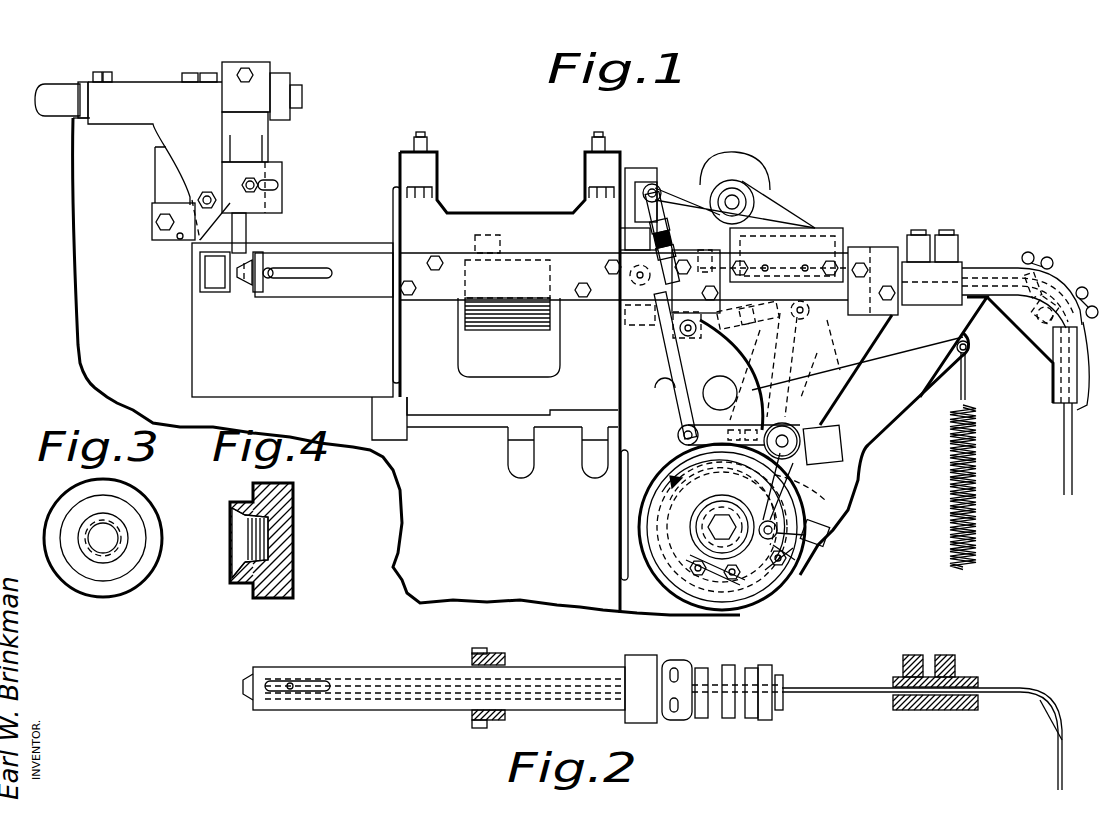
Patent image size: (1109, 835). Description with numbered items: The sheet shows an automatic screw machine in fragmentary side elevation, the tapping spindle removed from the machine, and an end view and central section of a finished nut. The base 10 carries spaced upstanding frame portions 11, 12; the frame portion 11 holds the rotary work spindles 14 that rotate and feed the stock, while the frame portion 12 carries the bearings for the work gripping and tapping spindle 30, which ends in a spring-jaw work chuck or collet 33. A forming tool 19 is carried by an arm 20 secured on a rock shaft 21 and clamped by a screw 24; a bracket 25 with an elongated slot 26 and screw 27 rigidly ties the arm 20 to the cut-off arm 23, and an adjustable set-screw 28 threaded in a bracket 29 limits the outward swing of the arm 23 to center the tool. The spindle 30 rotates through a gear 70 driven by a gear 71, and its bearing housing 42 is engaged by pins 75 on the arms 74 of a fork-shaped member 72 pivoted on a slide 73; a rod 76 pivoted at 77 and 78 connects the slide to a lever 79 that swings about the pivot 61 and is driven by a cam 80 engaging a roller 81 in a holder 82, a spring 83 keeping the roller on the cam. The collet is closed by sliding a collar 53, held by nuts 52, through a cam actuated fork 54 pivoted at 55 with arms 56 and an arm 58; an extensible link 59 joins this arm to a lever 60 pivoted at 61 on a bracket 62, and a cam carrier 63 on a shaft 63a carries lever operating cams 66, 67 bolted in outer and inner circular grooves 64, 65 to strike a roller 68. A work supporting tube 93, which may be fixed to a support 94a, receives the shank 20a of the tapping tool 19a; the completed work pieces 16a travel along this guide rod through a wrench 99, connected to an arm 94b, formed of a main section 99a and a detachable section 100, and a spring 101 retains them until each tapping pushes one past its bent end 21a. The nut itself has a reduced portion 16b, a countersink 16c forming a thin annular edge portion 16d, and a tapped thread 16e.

In FIG. 1, the base 10 is at (440, 486).
In FIG. 1, the frame portion 11 is at (75, 160).
In FIG. 1, the frame portion 12 is at (524, 210).
In FIG. 1, the rotary work spindle 14 is at (218, 283).
In FIG. 3, the severed work piece 16a is at (115, 586).
In FIG. 4, the severed work piece 16a is at (285, 596).
In FIG. 4, the reduced portion 16b is at (240, 582).
In FIG. 4, the countersink 16c is at (230, 520).
In FIG. 4, the annular edge portion 16d is at (237, 500).
In FIG. 4, the tapped thread 16e is at (262, 536).
In FIG. 1, the forming tool 19 is at (272, 268).
In FIG. 2, the tapping tool 19a is at (290, 692).
In FIG. 1, the arm 20 is at (262, 148).
In FIG. 1, the shank 20a is at (875, 255).
In FIG. 2, the shank 20a is at (826, 695).
In FIG. 1, the rock shaft 21 is at (52, 105).
In FIG. 1, the bent end 21a is at (1048, 325).
In FIG. 2, the bent end 21a is at (1055, 705).
In FIG. 1, the arm 23 is at (150, 128).
In FIG. 1, the screw 24 is at (255, 72).
In FIG. 1, the bracket 25 is at (275, 203).
In FIG. 1, the elongated slot 26 is at (278, 186).
In FIG. 1, the screw 27 is at (258, 182).
In FIG. 1, the adjustable set-screw 28 is at (208, 190).
In FIG. 1, the bracket 29 is at (152, 213).
In FIG. 1, the work gripping and tapping spindle 30 is at (362, 285).
In FIG. 2, the work gripping and tapping spindle 30 is at (416, 668).
In FIG. 1, the work chuck or collet 33 is at (245, 288).
In FIG. 2, the work chuck or collet 33 is at (243, 695).
In FIG. 1, the bearing housing 42 is at (625, 312).
In FIG. 2, the bearing housing 42 is at (633, 715).
In FIG. 2, the nuts 52 is at (752, 668).
In FIG. 1, the collar 53 is at (665, 185).
In FIG. 2, the collar 53 is at (702, 670).
In FIG. 1, the cam actuated fork 54 is at (756, 222).
In FIG. 1, the pivot 55 is at (760, 195).
In FIG. 1, the fork arms 56 is at (745, 252).
In FIG. 1, the arm 58 is at (712, 170).
In FIG. 1, the extensible link 59 is at (668, 345).
In FIG. 1, the lever 60 is at (678, 428).
In FIG. 1, the pivot 61 is at (800, 438).
In FIG. 1, the bracket 62 is at (880, 338).
In FIG. 1, the cam carrier 63 is at (640, 527).
In FIG. 1, the shaft 63a is at (675, 508).
In FIG. 1, the outer circular groove 64 is at (700, 512).
In FIG. 1, the inner circular groove 65 is at (690, 535).
In FIG. 1, the lever operating cam 66 is at (800, 550).
In FIG. 1, the lever operating cam 67 is at (708, 574).
In FIG. 1, the roller 68 is at (788, 470).
In FIG. 1, the gear 70 is at (488, 310).
In FIG. 2, the gear 70 is at (486, 650).
In FIG. 1, the gear 71 is at (535, 320).
In FIG. 1, the fork-shaped member 72 is at (636, 168).
In FIG. 1, the slide 73 is at (672, 318).
In FIG. 1, the fork arms 74 is at (630, 278).
In FIG. 1, the pins 75 is at (625, 248).
In FIG. 1, the rod 76 is at (765, 325).
In FIG. 1, the pivot 77 is at (692, 338).
In FIG. 1, the pivot 78 is at (812, 315).
In FIG. 1, the lever 79 is at (860, 464).
In FIG. 1, the cam 80 is at (697, 470).
In FIG. 1, the roller 81 is at (810, 525).
In FIG. 1, the holder 82 is at (830, 530).
In FIG. 1, the spring 83 is at (980, 450).
In FIG. 2, the work supporting tube 93 is at (437, 700).
In FIG. 1, the support 94a is at (955, 302).
In FIG. 1, the arm 94b is at (958, 258).
In FIG. 2, the arm 94b is at (950, 672).
In FIG. 1, the wrench 99 is at (992, 265).
In FIG. 2, the wrench 99 is at (978, 680).
In FIG. 1, the main section 99a is at (1060, 345).
In FIG. 1, the detachable section 100 is at (1052, 268).
In FIG. 1, the spring 101 is at (1068, 425).